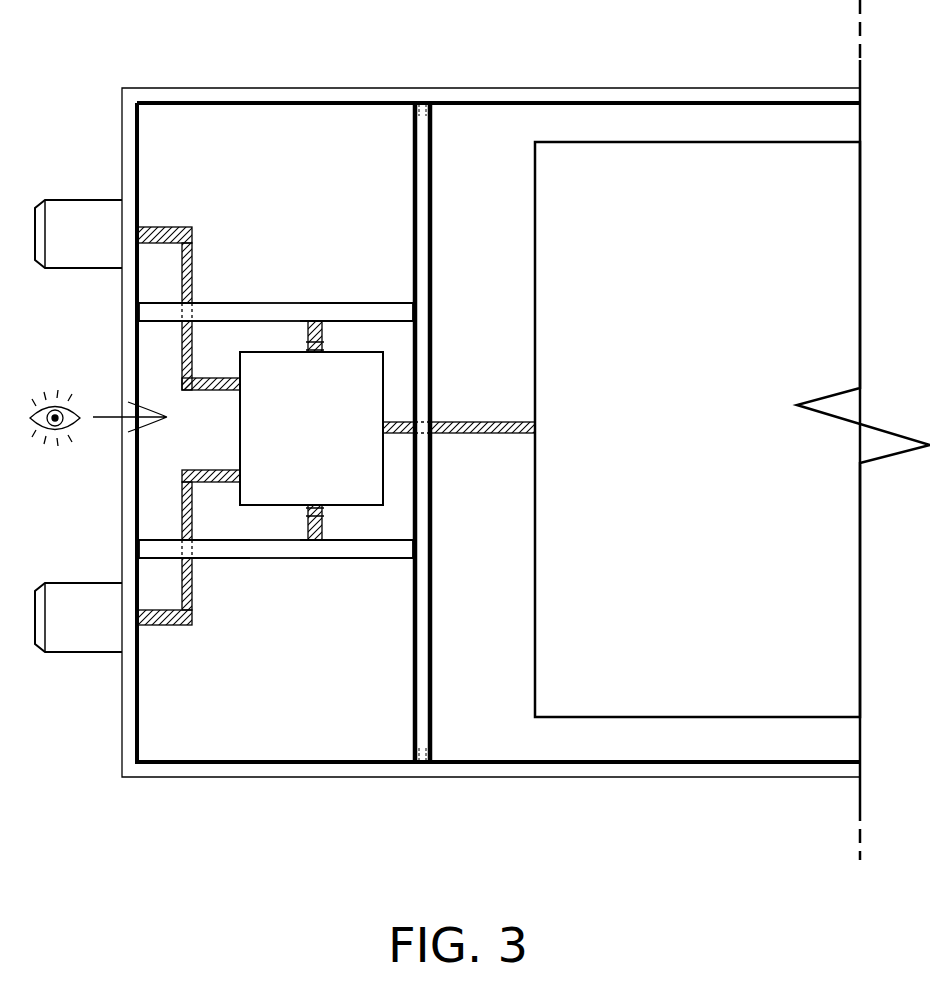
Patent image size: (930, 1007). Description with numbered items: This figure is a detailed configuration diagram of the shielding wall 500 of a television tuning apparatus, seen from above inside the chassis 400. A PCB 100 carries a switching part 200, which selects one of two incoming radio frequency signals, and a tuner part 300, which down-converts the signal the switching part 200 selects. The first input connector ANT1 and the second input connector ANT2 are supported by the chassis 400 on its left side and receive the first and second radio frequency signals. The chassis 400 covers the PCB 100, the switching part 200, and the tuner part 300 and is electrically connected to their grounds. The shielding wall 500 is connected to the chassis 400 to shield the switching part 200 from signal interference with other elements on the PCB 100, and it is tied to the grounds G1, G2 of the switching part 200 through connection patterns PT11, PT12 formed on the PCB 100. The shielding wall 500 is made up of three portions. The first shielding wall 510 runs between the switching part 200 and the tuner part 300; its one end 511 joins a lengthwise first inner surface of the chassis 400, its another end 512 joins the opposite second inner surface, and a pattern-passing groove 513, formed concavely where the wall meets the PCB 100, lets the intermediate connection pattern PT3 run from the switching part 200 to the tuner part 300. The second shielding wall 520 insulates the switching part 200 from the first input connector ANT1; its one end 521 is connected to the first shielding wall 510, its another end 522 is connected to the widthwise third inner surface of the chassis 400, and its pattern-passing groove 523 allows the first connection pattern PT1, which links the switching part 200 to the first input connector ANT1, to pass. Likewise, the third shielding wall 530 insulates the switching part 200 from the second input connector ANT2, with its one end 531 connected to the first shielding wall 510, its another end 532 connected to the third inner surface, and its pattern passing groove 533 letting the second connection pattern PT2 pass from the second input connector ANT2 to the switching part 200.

The PCB 100 is at (258, 117).
The switching part 200 is at (347, 360).
The tuner part 300 is at (747, 148).
The chassis 400 is at (643, 96).
The shielding wall 500 is at (398, 690).
The first shielding wall 510 is at (425, 212).
The one end of first shielding wall 511 is at (423, 108).
The another end of first shielding wall 512 is at (422, 737).
The pattern-passing groove 513 is at (430, 437).
The second shielding wall 520 is at (258, 300).
The one end of second shielding wall 521 is at (405, 309).
The another end of second shielding wall 522 is at (140, 311).
The pattern-passing groove 523 is at (196, 306).
The third shielding wall 530 is at (277, 551).
The one end of third shielding wall 531 is at (405, 551).
The another end of third shielding wall 532 is at (153, 547).
The pattern passing groove 533 is at (180, 532).
The first connection pattern PT1 is at (175, 232).
The second connection pattern PT2 is at (188, 592).
The connection pattern PT11 is at (308, 304).
The connection pattern PT12 is at (316, 542).
The intermediate connection pattern PT3 is at (468, 421).
The ground G1 is at (305, 347).
The ground G2 is at (305, 513).
The first input connector ANT1 is at (74, 215).
The second input connector ANT2 is at (74, 598).